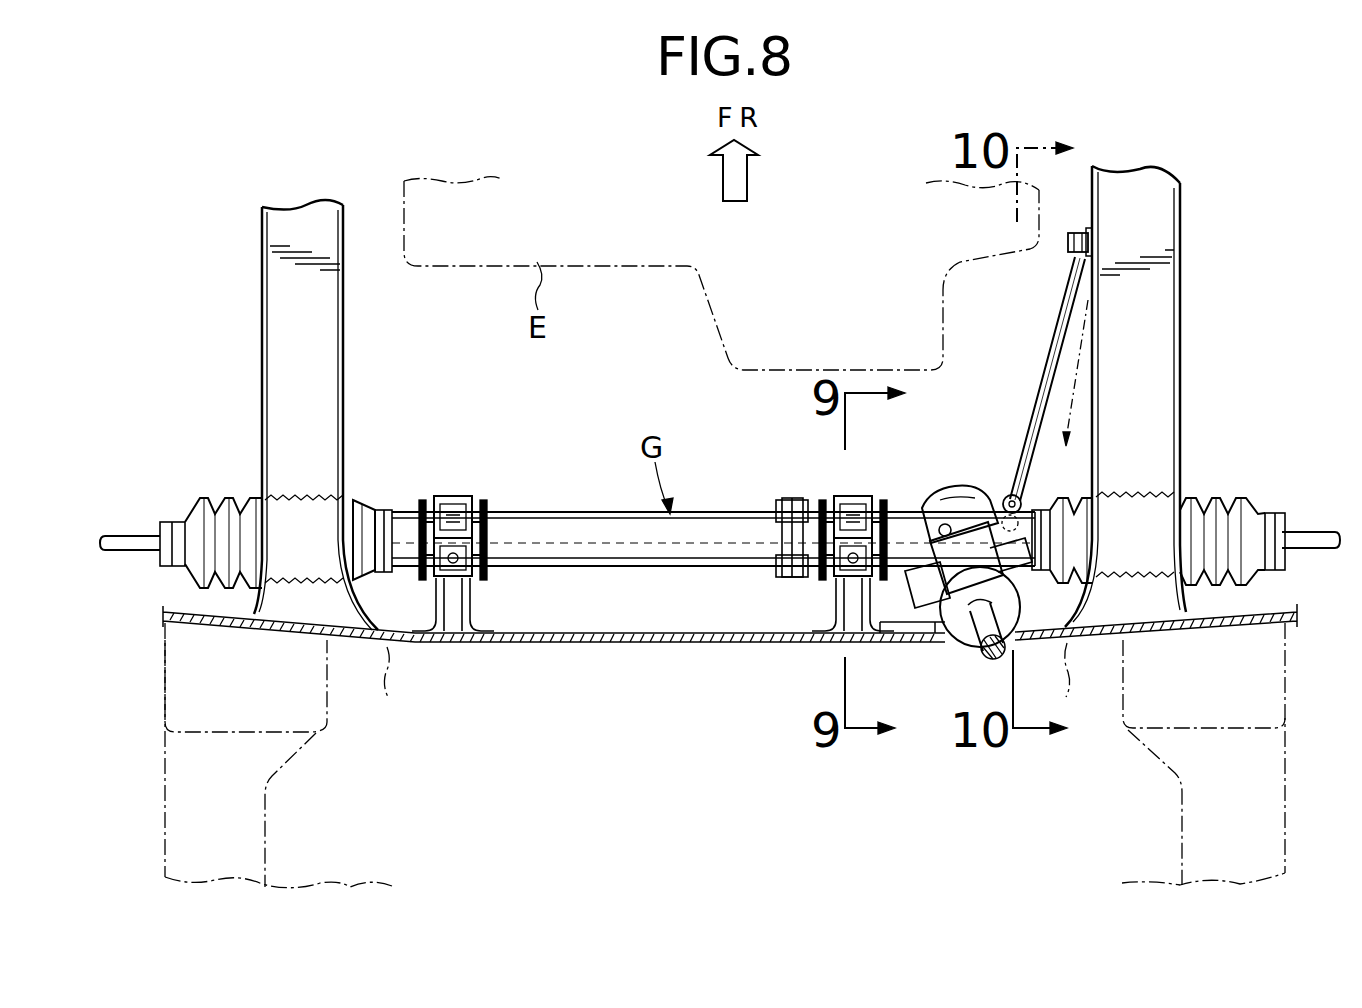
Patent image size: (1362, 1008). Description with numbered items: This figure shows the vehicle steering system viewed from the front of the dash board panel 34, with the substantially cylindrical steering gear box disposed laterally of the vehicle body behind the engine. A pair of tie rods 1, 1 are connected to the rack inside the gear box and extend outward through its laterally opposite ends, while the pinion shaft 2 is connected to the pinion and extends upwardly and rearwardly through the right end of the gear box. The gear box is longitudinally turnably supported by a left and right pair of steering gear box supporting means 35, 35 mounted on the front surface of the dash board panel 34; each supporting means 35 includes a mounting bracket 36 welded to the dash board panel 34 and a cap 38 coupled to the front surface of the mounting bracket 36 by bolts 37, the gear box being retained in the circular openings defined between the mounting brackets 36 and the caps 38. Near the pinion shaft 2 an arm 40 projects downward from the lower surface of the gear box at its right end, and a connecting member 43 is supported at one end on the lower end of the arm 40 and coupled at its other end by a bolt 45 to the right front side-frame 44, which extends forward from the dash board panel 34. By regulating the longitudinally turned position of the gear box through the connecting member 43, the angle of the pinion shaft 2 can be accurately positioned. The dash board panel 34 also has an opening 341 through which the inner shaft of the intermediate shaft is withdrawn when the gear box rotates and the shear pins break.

The tie rod 1 is at (128, 553).
The pinion shaft 2 is at (982, 650).
The dash board panel 34 is at (624, 650).
The opening 341 is at (907, 642).
The steering gear box supporting means 35 is at (481, 480).
The mounting bracket 36 is at (470, 600).
The bolt 37 is at (453, 518).
The cap 38 is at (428, 500).
The arm 40 is at (1006, 497).
The connecting member 43 is at (1058, 378).
The right front side-frame 44 is at (274, 339).
The bolt 45 is at (1070, 246).